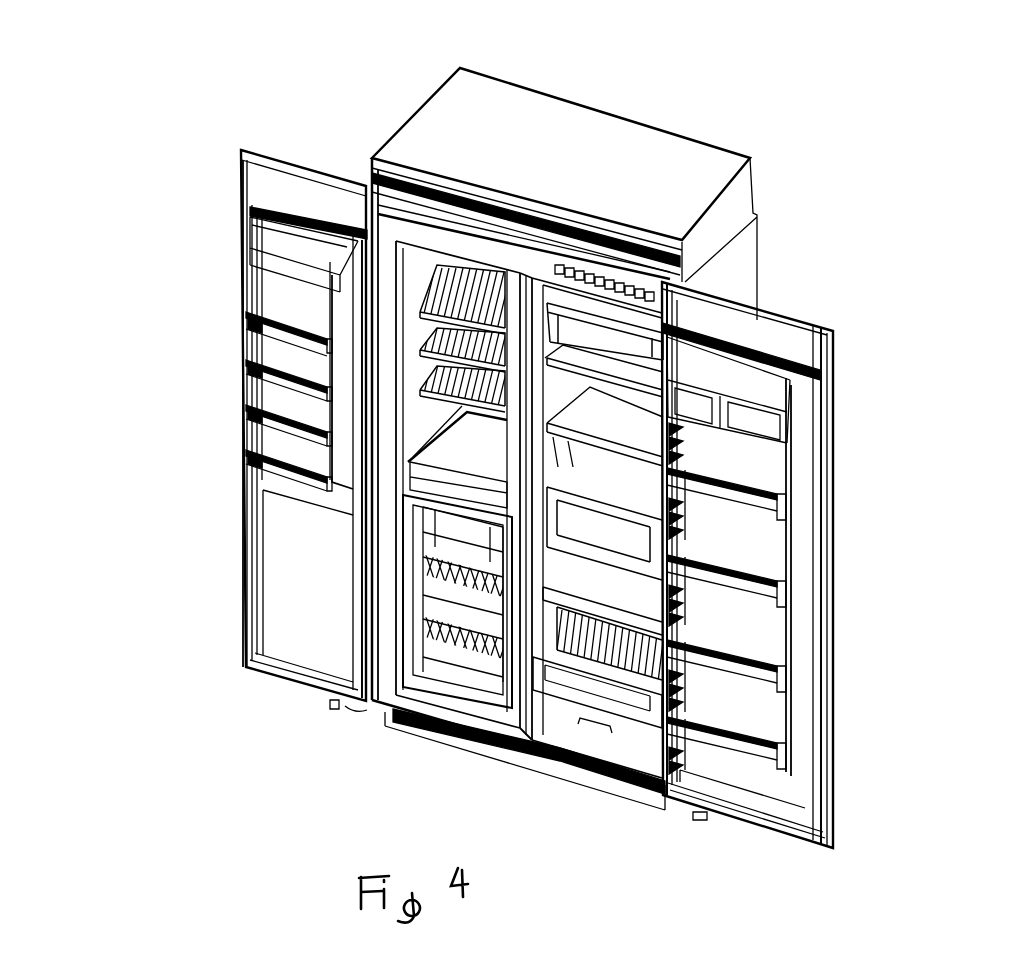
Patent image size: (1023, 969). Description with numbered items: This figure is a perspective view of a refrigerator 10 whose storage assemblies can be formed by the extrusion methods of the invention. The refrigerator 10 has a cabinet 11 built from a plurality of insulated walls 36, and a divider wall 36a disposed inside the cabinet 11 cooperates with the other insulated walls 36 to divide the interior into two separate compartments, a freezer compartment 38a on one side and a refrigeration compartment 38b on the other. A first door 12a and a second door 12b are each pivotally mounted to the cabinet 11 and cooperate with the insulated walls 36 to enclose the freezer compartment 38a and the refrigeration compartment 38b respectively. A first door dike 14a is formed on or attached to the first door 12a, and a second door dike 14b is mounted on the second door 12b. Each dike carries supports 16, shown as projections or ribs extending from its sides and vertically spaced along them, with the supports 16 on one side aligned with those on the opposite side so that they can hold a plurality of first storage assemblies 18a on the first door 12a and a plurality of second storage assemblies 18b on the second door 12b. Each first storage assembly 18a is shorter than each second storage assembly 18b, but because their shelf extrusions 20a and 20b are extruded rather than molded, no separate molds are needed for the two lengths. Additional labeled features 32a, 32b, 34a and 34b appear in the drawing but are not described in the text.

The refrigerator 10 is at (352, 109).
The cabinet 11 is at (705, 174).
The first door 12a is at (243, 572).
The second door 12b is at (833, 617).
The first door dike 14a is at (258, 218).
The second door dike 14b is at (800, 458).
The supports 16 is at (242, 283).
The first storage assemblies 18a is at (234, 329).
The second storage assemblies 18b is at (805, 501).
The shelf extrusion 20a is at (238, 325).
The shelf extrusion 20b is at (728, 500).
The freezer door shelf rail 32a is at (283, 323).
The fresh food door shelf rail 32b is at (735, 478).
The freezer door shelf support 34a is at (305, 350).
The fresh food door trim 34b is at (710, 473).
The insulated walls 36 is at (432, 273).
The divider wall 36a is at (545, 300).
The freezer compartment 38a is at (458, 468).
The refrigeration compartment 38b is at (599, 498).